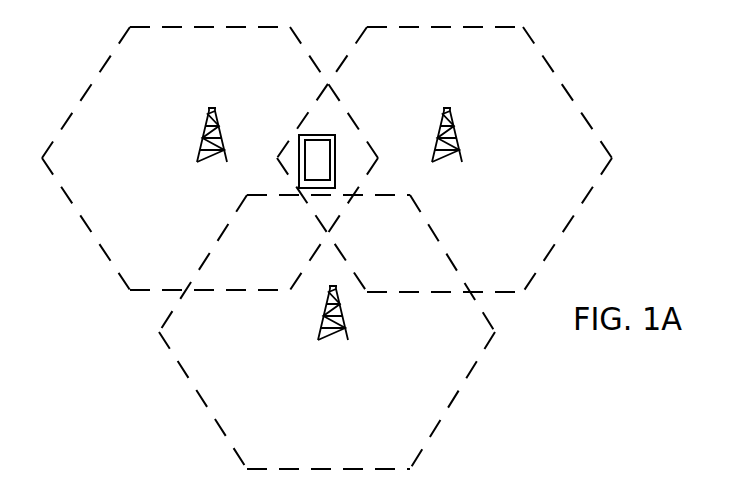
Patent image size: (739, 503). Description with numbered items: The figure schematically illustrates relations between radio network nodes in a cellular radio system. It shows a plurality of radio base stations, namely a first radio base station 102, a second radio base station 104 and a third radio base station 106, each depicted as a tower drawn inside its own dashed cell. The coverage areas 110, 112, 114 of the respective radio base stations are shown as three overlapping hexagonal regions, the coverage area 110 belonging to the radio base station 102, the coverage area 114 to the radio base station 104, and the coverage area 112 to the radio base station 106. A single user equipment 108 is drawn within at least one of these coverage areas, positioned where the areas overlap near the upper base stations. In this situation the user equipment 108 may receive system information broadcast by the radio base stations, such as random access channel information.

The radio base station 102 is at (193, 135).
The radio base station 104 is at (469, 135).
The radio base station 106 is at (312, 315).
The user equipment 108 is at (325, 135).
The coverage area 110 is at (93, 93).
The coverage area 112 is at (213, 427).
The coverage area 114 is at (444, 159).